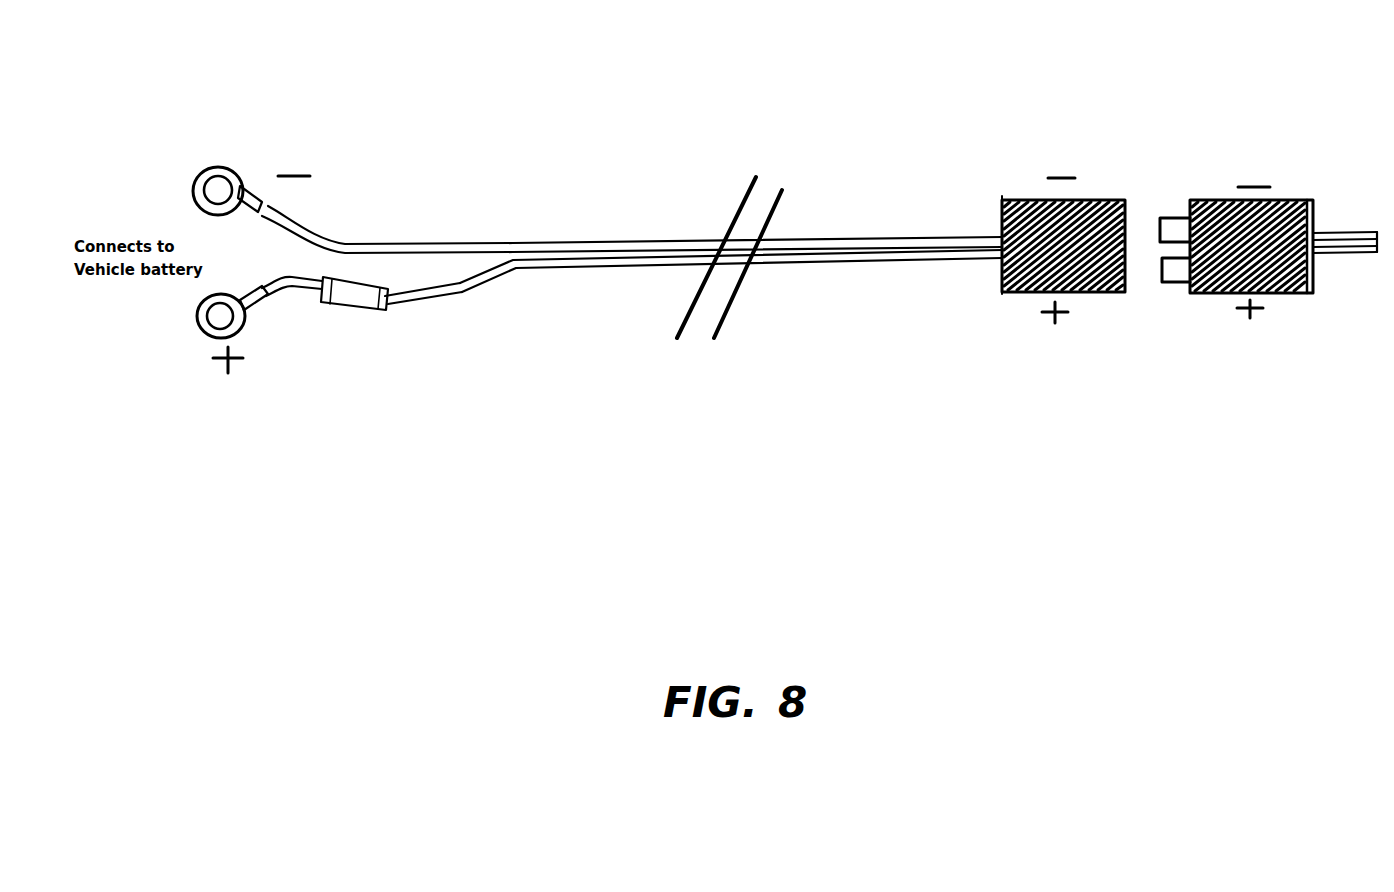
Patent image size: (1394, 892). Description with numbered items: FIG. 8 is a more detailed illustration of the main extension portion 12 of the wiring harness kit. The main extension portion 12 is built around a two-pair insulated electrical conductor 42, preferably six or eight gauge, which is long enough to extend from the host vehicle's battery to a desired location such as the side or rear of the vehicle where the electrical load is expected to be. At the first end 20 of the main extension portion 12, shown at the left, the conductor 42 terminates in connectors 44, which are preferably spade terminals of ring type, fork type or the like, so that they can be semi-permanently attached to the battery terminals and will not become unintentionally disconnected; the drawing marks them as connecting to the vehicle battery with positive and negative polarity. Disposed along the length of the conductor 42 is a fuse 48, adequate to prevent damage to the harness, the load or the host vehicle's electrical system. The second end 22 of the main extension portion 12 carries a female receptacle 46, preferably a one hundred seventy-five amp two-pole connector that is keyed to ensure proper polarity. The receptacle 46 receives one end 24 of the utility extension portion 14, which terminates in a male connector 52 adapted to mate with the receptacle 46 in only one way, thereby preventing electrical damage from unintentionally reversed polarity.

The main extension portion 12 is at (840, 190).
The utility extension portion 14 is at (1337, 260).
The first end 20 is at (340, 204).
The second end 22 is at (1098, 130).
The one end 24 is at (1220, 120).
The two-pair insulated electrical conductor 42 is at (587, 240).
The connectors 44 is at (195, 190).
The female receptacle 46 is at (1018, 200).
The fuse 48 is at (341, 308).
The male connector 52 is at (1287, 293).